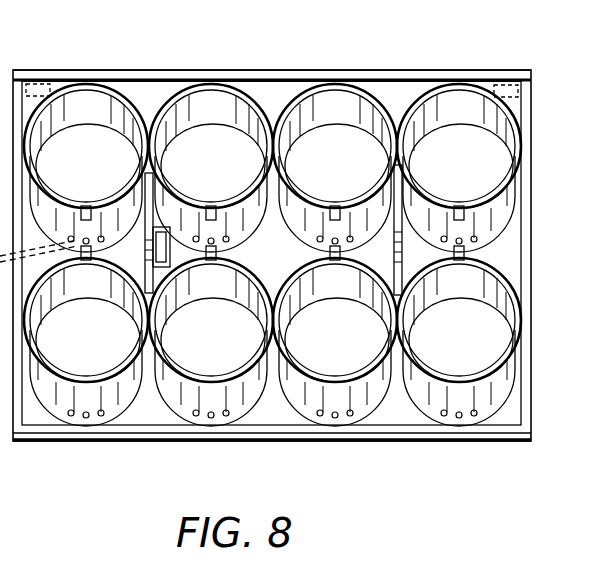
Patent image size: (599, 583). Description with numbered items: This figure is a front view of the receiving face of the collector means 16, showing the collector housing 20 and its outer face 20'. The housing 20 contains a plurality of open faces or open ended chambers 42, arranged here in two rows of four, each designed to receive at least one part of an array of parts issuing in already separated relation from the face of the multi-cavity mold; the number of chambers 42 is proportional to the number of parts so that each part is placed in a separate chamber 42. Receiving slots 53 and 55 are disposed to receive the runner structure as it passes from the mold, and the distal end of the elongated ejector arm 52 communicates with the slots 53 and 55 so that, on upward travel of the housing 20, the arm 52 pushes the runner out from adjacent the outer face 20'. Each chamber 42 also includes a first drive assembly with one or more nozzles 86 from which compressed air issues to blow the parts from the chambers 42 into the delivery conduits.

The collector means 16 is at (290, 26).
The collector housing 20 is at (272, 55).
The outer face 20' is at (271, 53).
The open ended chambers 42 is at (272, 255).
The elongated arm 52 is at (404, 214).
The receiving slot 53 is at (86, 206).
The receiving slot 55 is at (250, 233).
The nozzles 86 is at (90, 432).